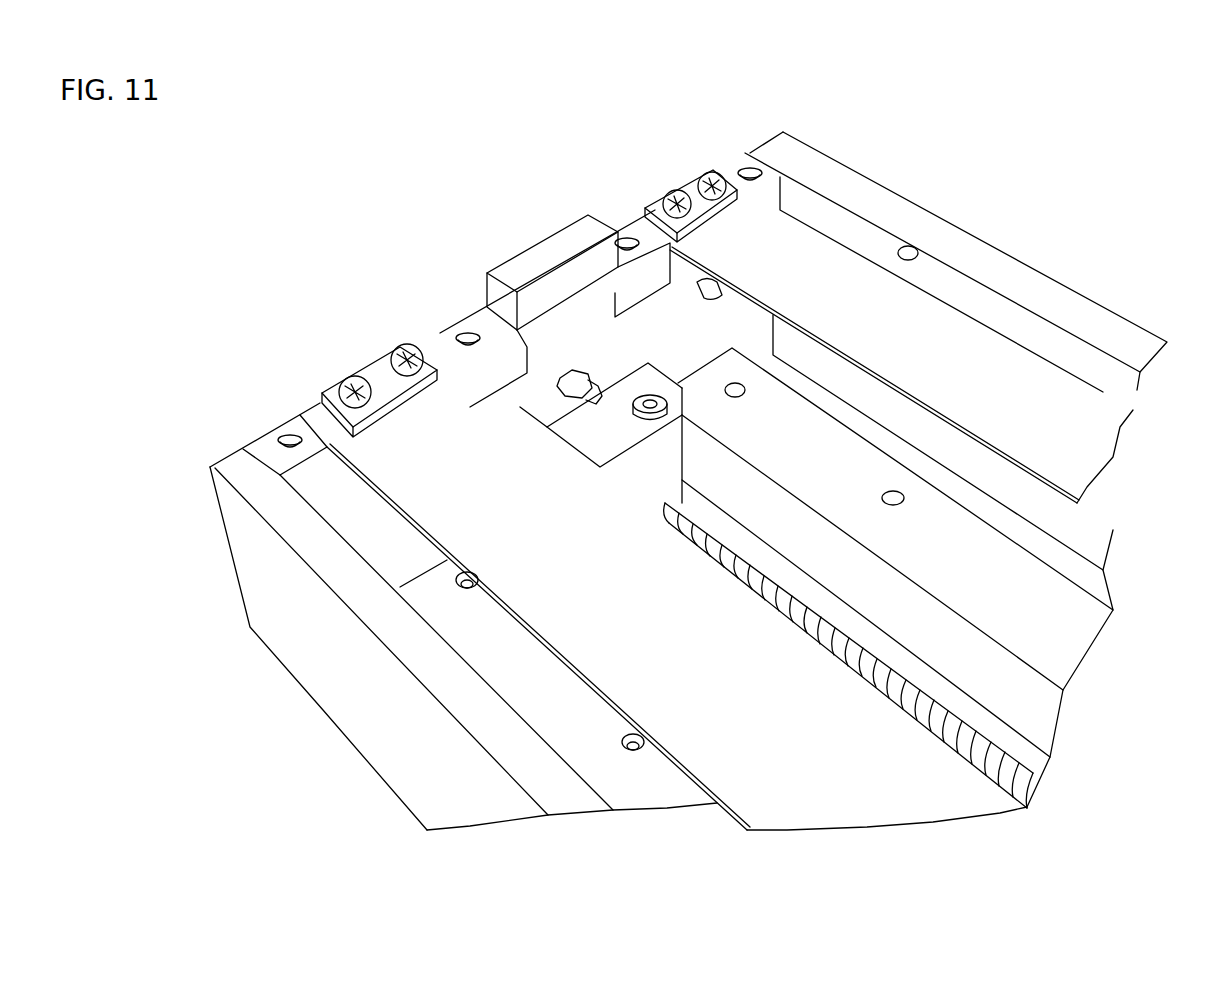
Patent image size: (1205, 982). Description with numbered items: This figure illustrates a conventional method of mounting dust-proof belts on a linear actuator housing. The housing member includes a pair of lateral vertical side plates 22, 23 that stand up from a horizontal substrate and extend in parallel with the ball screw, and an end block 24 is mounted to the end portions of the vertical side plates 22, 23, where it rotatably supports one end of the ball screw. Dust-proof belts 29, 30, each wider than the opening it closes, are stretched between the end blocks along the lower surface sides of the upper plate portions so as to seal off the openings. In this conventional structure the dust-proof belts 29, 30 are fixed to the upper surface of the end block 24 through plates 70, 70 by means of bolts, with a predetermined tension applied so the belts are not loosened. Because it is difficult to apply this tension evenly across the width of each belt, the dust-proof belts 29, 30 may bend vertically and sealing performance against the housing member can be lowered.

The lateral vertical side plate 22 is at (353, 702).
The lateral vertical side plate 23 is at (857, 190).
The end block 24 is at (547, 258).
The dust-proof belt 29 is at (763, 800).
The dust-proof belt 30 is at (1083, 407).
The plate 70 is at (382, 380).